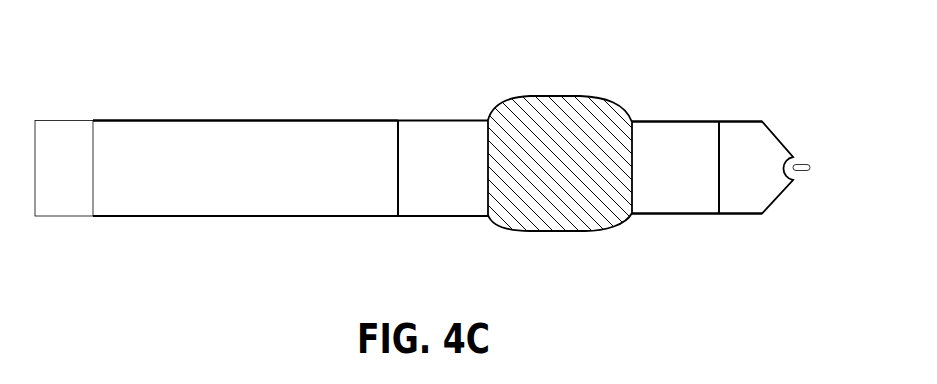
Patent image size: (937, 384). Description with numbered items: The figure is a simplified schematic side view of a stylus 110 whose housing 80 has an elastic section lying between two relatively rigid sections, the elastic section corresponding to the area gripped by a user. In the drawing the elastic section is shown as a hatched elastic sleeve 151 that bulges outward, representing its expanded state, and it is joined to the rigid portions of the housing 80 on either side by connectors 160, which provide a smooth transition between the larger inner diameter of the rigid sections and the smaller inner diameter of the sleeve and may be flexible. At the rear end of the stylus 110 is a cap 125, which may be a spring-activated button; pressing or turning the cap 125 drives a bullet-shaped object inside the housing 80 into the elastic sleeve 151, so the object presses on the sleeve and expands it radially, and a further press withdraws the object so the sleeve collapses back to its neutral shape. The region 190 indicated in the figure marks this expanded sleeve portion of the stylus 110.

The stylus 110 is at (237, 82).
The cap 125 is at (73, 212).
The housing 80 is at (342, 119).
The connectors 160 is at (457, 138).
The expandable region 190 is at (553, 144).
The elastic sleeve 151 is at (588, 213).